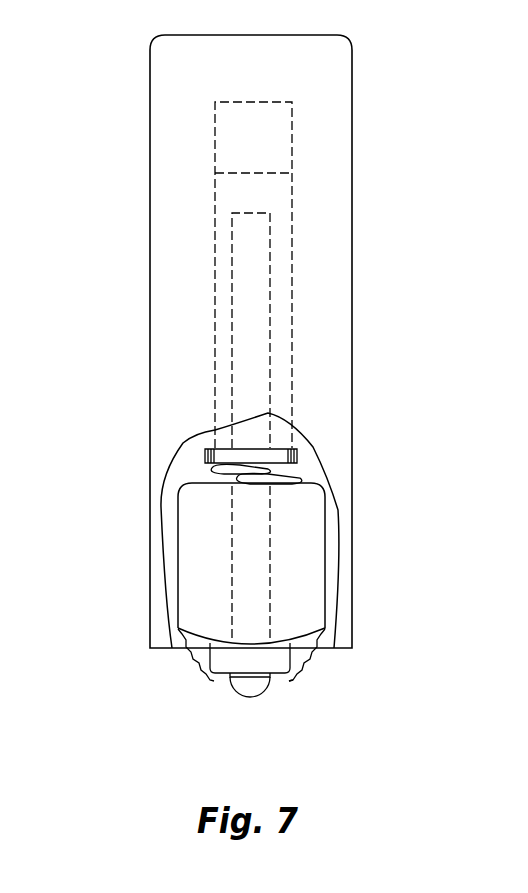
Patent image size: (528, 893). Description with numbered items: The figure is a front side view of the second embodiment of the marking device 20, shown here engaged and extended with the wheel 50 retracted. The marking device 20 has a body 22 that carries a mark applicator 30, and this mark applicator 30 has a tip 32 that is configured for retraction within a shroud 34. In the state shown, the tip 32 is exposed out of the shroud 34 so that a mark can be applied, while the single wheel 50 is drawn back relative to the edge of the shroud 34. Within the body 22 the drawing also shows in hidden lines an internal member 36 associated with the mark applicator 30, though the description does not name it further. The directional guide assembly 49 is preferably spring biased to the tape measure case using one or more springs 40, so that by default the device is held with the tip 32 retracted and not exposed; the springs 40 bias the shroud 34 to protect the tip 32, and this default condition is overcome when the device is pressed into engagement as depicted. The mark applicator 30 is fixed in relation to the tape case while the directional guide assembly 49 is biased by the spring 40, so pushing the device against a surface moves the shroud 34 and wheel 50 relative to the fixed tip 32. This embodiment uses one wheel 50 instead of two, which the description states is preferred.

The marking device 20 is at (412, 526).
The body 22 is at (160, 597).
The mark applicator 30 is at (160, 679).
The tip 32 is at (260, 690).
The shroud 34 is at (223, 660).
The plunger actuator 36 is at (270, 325).
The spring 40 is at (293, 480).
The directional guide assembly 49 is at (310, 690).
The wheel 50 is at (300, 657).